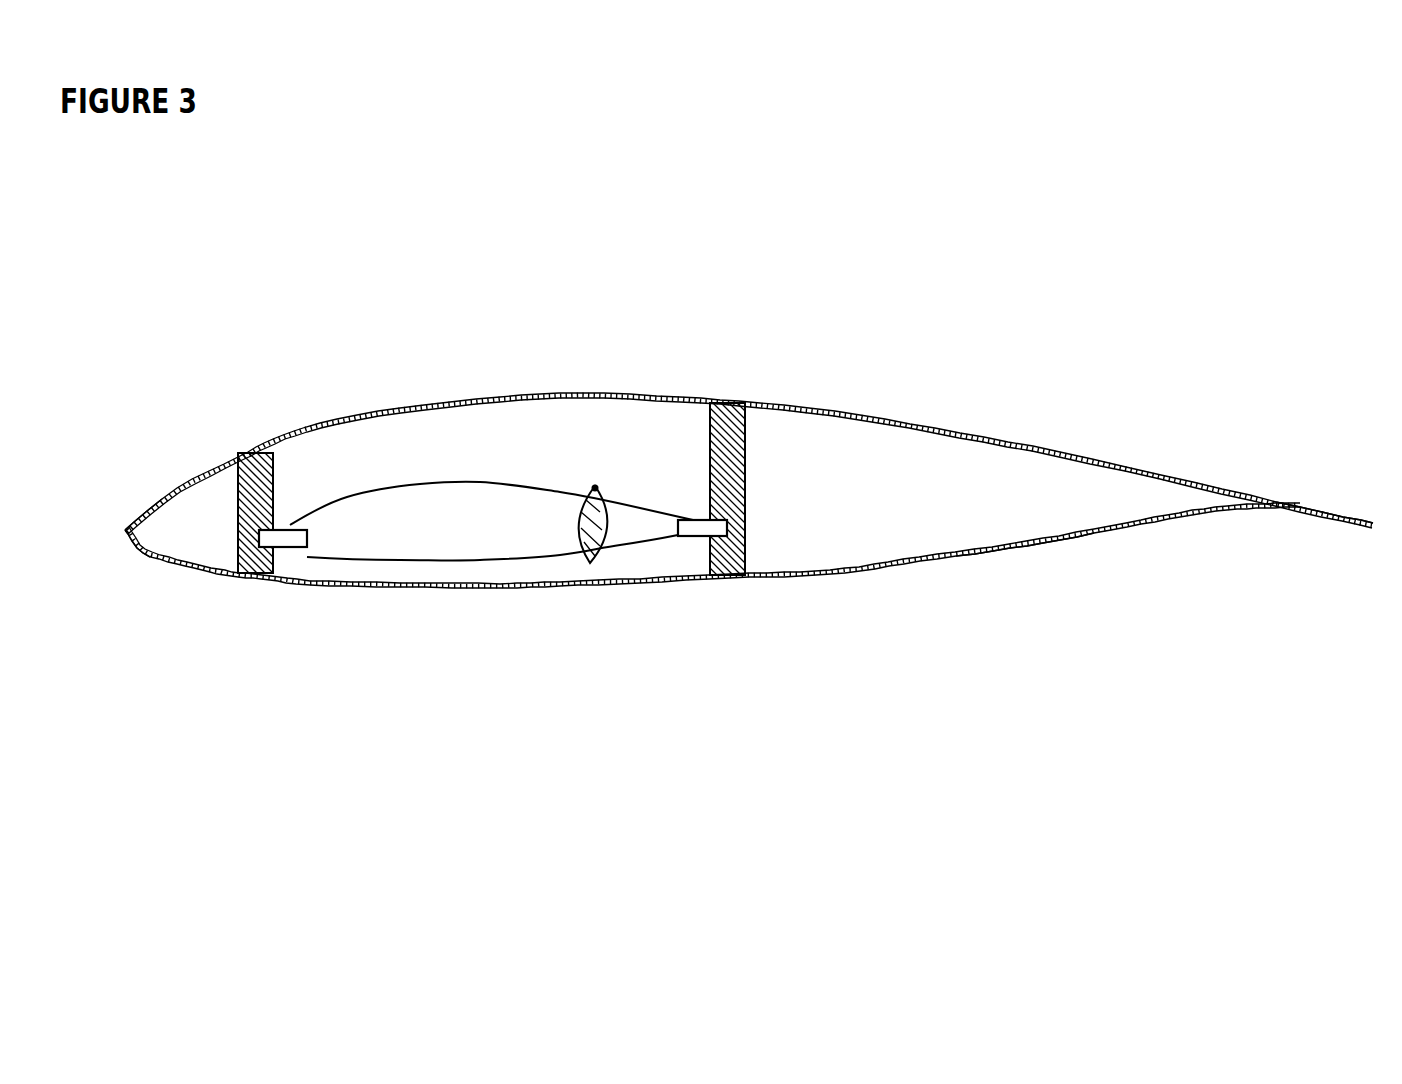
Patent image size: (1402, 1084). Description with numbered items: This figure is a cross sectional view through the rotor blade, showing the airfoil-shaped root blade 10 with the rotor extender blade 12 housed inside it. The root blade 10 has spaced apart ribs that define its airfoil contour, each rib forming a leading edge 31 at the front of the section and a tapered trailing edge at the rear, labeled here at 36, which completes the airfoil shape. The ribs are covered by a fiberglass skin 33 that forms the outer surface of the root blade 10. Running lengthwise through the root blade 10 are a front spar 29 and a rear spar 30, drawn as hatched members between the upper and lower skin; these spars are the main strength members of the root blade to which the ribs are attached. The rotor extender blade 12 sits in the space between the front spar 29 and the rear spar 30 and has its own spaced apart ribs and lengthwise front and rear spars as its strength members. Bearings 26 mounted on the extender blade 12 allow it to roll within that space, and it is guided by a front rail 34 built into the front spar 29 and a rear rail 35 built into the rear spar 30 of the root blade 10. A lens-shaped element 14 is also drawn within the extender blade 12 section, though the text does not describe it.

The root blade 10 is at (843, 542).
The rotor extender blade 12 is at (418, 517).
The lens 14 is at (597, 488).
The bearings 26 is at (683, 537).
The front spar 29 is at (263, 450).
The rear spar 30 is at (733, 577).
The leading edge 31 is at (131, 540).
The fiberglass skin 33 is at (1030, 543).
The front rail 34 is at (258, 550).
The rear rail 35 is at (737, 520).
The trailing edge 36 is at (1306, 506).